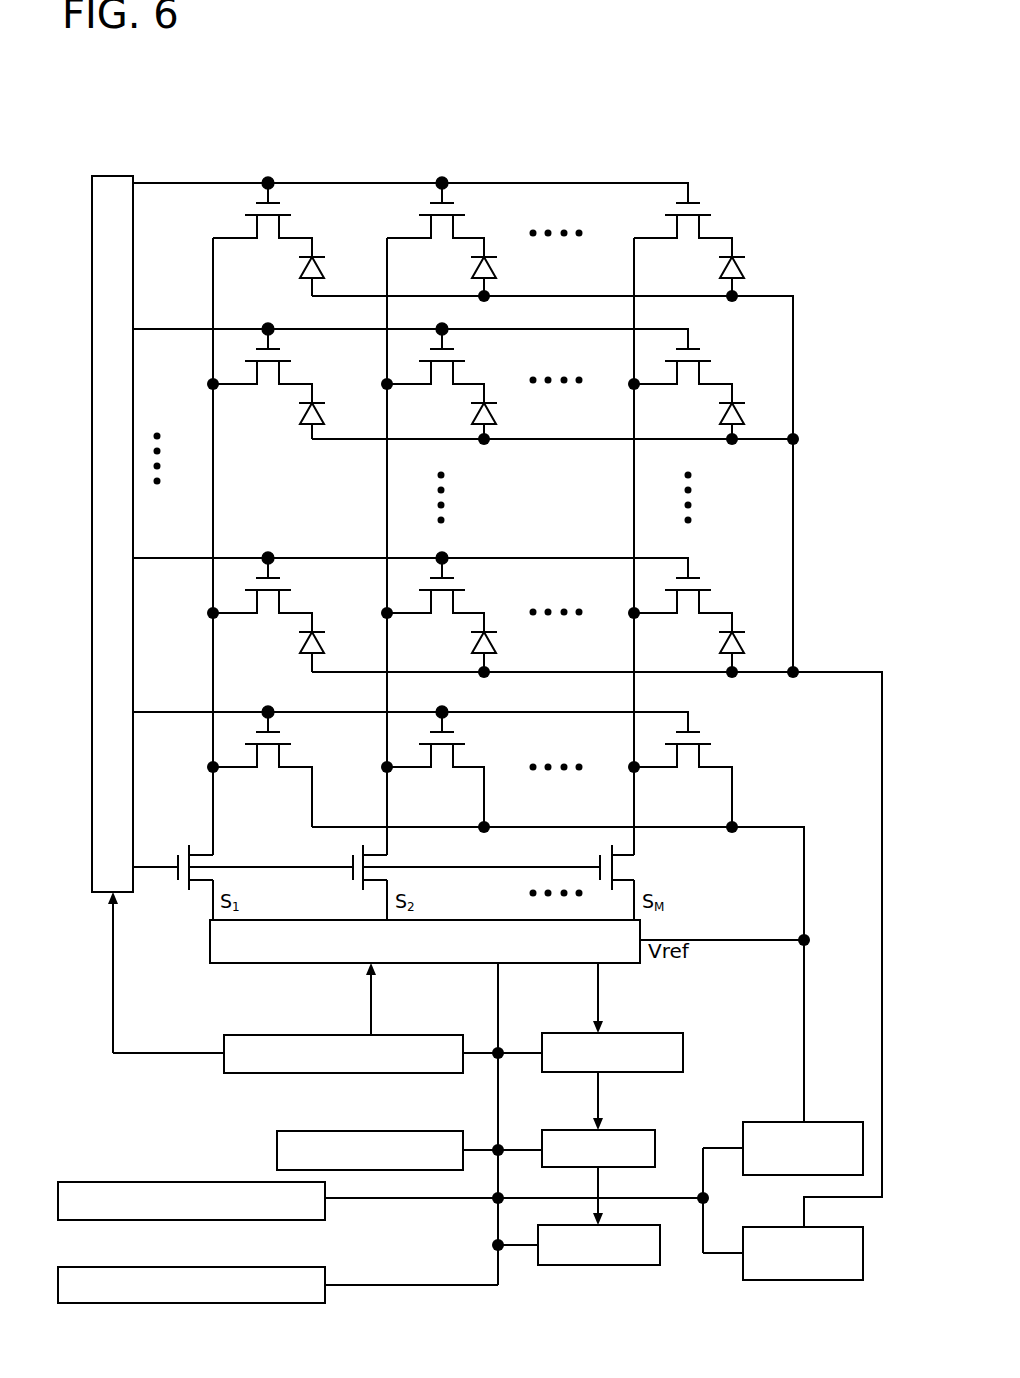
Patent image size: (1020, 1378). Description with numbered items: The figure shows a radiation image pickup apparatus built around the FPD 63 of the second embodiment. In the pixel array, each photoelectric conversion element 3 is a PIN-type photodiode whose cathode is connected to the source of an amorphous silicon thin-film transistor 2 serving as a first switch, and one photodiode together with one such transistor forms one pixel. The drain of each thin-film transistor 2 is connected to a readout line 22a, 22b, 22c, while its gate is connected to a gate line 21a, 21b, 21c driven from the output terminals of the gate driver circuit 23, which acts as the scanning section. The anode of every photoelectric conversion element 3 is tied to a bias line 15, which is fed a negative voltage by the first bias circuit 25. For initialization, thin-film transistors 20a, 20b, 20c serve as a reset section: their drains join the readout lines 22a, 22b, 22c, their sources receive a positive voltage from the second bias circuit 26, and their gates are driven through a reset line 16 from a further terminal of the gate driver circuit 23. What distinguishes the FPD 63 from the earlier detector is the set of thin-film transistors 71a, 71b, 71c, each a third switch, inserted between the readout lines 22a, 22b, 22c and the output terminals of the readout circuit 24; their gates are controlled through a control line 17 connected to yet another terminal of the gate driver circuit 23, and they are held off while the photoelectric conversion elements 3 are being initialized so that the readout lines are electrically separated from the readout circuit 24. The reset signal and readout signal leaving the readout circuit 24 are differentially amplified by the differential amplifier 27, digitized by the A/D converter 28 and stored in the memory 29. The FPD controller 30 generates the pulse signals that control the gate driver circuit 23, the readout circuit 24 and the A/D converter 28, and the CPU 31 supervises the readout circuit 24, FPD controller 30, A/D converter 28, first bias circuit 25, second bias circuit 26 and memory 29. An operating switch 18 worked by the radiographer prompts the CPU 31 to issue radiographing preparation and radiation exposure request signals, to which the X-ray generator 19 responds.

The thin-film transistor 2 is at (282, 203).
The photoelectric conversion element 3 is at (318, 256).
The bias line 15 is at (793, 556).
The reset line 16 is at (168, 712).
The control line 17 is at (155, 867).
The operating switch 18 is at (104, 1182).
The X-ray generator 19 is at (100, 1303).
The thin-film transistor 20a is at (271, 748).
The thin-film transistor 20b is at (445, 748).
The thin-film transistor 20c is at (691, 748).
The gate line 21a is at (178, 183).
The gate line 21b is at (170, 329).
The gate line 21c is at (172, 558).
The readout line 22a is at (210, 826).
The readout line 22b is at (386, 852).
The readout line 22c is at (632, 852).
The gate driver circuit 23 is at (112, 176).
The readout circuit 24 is at (210, 950).
The first bias circuit 25 is at (832, 1280).
The second bias circuit 26 is at (832, 1122).
The differential amplifier 27 is at (683, 1051).
The A/D converter 28 is at (655, 1138).
The memory 29 is at (632, 1265).
The FPD controller 30 is at (410, 1035).
The CPU 31 is at (277, 1156).
The FPD 63 is at (727, 200).
The thin-film transistor 71a is at (215, 890).
The thin-film transistor 71b is at (390, 890).
The thin-film transistor 71c is at (638, 890).